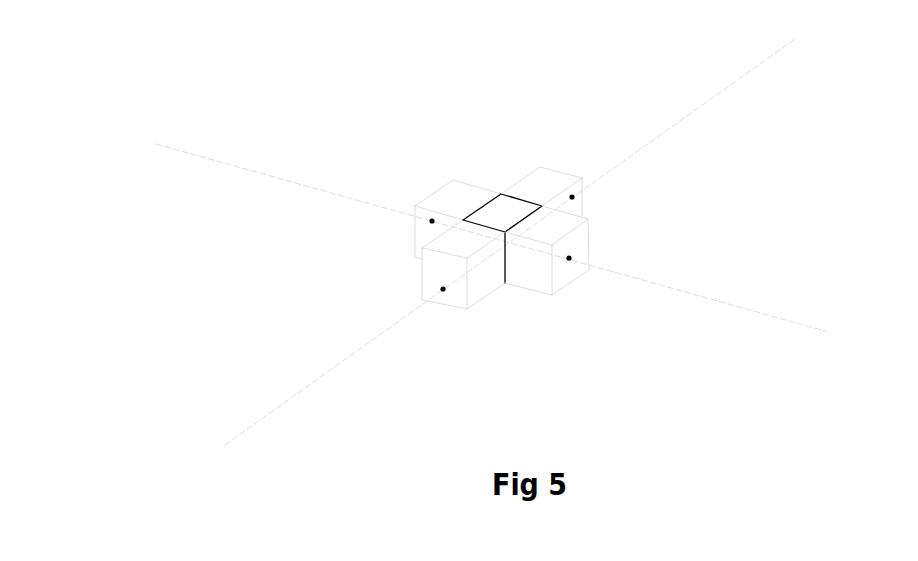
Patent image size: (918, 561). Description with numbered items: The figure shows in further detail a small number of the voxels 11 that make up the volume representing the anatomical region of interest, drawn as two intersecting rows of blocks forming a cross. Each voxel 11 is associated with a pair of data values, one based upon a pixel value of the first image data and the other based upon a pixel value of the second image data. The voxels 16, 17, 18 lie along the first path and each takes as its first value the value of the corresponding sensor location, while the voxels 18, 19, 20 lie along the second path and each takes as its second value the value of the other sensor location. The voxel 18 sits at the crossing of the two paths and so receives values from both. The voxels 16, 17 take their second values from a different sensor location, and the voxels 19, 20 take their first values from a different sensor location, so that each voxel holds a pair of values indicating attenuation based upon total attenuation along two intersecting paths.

The voxels 11 is at (514, 234).
The voxel 16 is at (625, 244).
The voxel 17 is at (430, 187).
The voxel 18 is at (508, 173).
The voxel 19 is at (394, 264).
The voxel 20 is at (556, 154).